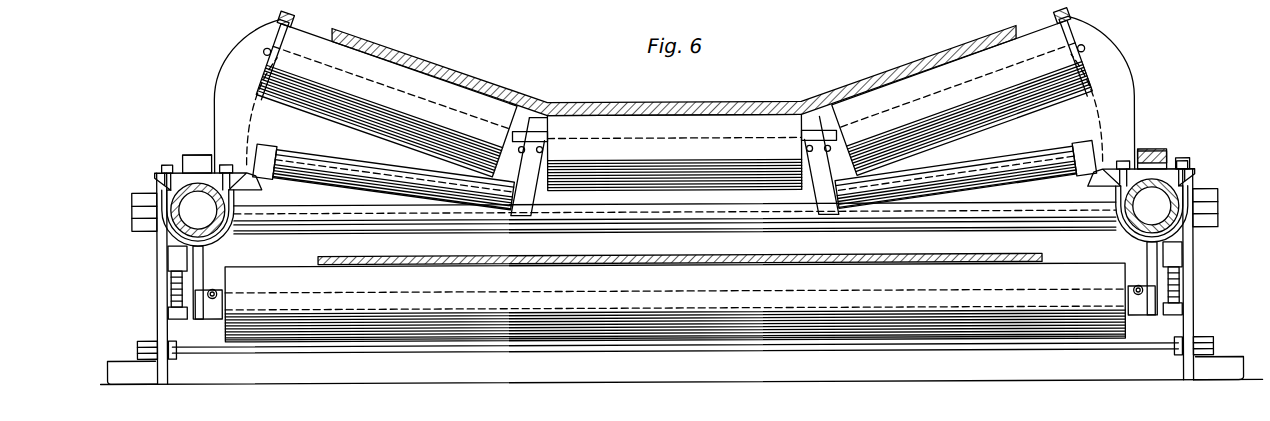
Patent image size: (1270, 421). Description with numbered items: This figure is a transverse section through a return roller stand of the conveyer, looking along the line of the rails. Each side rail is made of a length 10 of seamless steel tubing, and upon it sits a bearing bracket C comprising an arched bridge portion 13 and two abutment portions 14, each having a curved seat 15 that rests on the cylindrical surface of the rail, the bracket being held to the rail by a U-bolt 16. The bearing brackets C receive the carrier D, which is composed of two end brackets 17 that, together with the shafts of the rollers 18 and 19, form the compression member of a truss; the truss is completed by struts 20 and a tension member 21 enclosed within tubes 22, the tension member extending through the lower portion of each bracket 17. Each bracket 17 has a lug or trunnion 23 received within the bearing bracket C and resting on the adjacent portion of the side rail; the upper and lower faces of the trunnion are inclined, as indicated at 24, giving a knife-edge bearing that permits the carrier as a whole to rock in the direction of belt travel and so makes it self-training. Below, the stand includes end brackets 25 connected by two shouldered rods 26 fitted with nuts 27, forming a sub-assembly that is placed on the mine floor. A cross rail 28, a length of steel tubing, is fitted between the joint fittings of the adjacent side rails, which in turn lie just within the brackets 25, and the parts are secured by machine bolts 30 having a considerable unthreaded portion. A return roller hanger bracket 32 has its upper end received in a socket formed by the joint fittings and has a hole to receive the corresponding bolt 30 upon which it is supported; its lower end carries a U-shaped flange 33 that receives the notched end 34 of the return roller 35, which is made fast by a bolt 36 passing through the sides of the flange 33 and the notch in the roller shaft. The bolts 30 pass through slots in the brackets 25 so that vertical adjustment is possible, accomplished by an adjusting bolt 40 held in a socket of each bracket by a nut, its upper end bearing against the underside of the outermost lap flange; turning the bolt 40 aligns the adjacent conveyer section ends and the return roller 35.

The length of seamless steel tubing 10 is at (218, 240).
The arched bridge portion 13 is at (188, 153).
The abutment portion 14 is at (180, 183).
The curved seat 15 is at (213, 198).
The U-bolt 16 is at (166, 220).
The end bracket 17 is at (240, 78).
The roller 18 is at (390, 73).
The roller 19 is at (603, 123).
The strut 20 is at (533, 188).
The tension member 21 is at (310, 161).
The tube 22 is at (376, 173).
The lug or trunnion 23 is at (1165, 165).
The inclined face 24 is at (1162, 159).
The end bracket 25 is at (160, 377).
The shouldered rod 26 is at (363, 343).
The nut 27 is at (143, 335).
The cross rail 28 is at (1052, 235).
The machine bolt 30 is at (132, 198).
The return roller hanger bracket 32 is at (200, 261).
The U-shaped flange 33 is at (207, 317).
The notched end 34 is at (227, 291).
The return roller 35 is at (573, 323).
The bolt 36 is at (214, 298).
The adjusting bolt 40 is at (170, 291).
The bearing bracket C is at (198, 151).
The carrier D is at (537, 126).